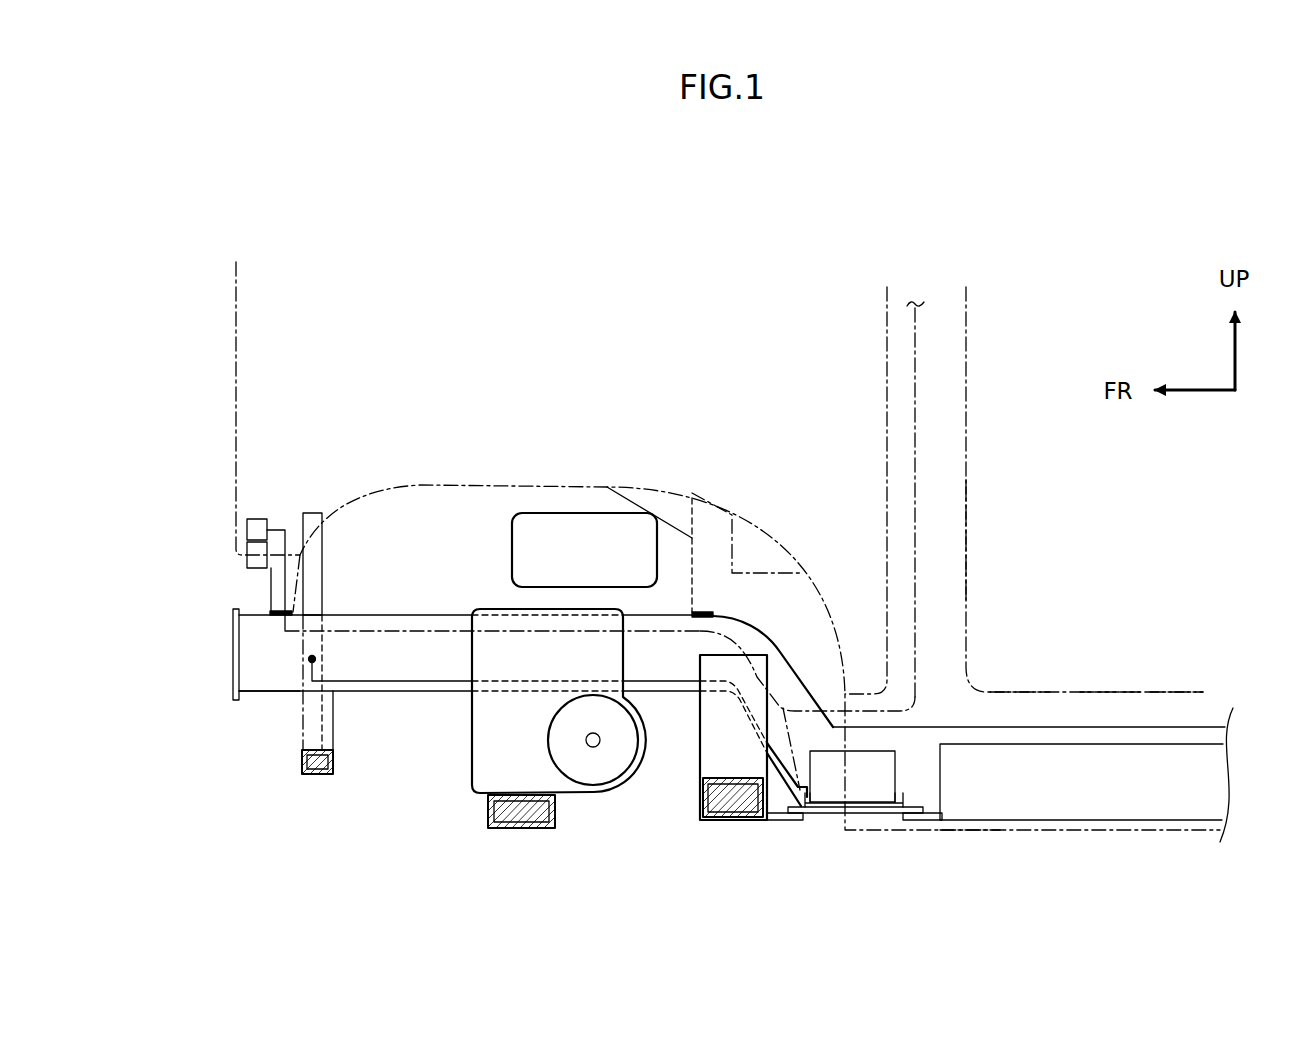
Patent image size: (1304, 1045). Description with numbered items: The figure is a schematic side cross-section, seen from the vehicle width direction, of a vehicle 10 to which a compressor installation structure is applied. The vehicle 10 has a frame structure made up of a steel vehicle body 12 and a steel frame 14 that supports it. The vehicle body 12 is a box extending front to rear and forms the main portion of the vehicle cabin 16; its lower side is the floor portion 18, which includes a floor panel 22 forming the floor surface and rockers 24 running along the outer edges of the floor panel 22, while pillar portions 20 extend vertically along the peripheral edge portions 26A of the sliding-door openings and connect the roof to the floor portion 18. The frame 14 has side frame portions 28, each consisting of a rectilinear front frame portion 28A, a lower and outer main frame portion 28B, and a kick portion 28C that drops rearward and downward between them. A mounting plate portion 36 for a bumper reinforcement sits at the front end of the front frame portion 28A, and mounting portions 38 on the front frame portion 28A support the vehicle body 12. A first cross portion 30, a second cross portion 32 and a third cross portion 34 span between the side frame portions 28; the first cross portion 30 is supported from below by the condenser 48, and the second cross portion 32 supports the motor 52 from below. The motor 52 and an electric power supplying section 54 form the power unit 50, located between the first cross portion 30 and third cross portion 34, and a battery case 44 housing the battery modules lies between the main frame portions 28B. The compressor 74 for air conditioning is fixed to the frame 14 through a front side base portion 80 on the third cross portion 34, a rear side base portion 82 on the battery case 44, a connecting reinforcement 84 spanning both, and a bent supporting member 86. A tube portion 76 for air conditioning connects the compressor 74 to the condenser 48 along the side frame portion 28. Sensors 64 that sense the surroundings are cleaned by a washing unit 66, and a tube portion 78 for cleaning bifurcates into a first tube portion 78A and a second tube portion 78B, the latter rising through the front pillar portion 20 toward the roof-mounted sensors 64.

The vehicle 10 is at (1046, 230).
The vehicle body 12 is at (978, 350).
The frame 14 is at (309, 803).
The vehicle cabin 16 is at (1012, 692).
The floor portion 18 is at (1168, 692).
The pillar portion 20 is at (966, 447).
The floor panel 22 is at (1108, 692).
The rocker 24 is at (950, 830).
The peripheral edge portion 26A is at (966, 535).
The side frame portion 28 is at (270, 696).
The front frame portion 28A is at (257, 630).
The main frame portion 28B is at (1200, 733).
The kick portion 28C is at (742, 634).
The first cross portion 30 is at (328, 732).
The second cross portion 32 is at (555, 812).
The third cross portion 34 is at (748, 821).
The mounting plate portion 36 is at (233, 607).
The mounting portion 38 is at (282, 612).
The battery case 44 is at (1097, 800).
The condenser 48 is at (313, 512).
The power unit 50 is at (530, 505).
The motor 52 is at (485, 768).
The electric power supplying section 54 is at (572, 528).
The sensor 64 is at (257, 547).
The washing unit 66 is at (257, 528).
The compressor for air conditioning 74 is at (873, 760).
The tube portion for air conditioning 76 is at (359, 681).
The tube portion for cleaning 78 is at (407, 627).
The first tube portion 78A is at (342, 630).
The second tube portion 78B is at (914, 364).
The front side base portion 80 is at (793, 821).
The rear side base portion 82 is at (923, 821).
The connecting reinforcement 84 is at (834, 814).
The supporting member 86 is at (905, 797).